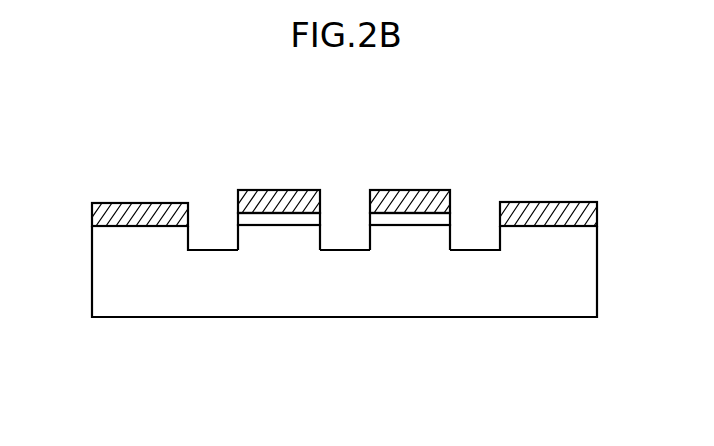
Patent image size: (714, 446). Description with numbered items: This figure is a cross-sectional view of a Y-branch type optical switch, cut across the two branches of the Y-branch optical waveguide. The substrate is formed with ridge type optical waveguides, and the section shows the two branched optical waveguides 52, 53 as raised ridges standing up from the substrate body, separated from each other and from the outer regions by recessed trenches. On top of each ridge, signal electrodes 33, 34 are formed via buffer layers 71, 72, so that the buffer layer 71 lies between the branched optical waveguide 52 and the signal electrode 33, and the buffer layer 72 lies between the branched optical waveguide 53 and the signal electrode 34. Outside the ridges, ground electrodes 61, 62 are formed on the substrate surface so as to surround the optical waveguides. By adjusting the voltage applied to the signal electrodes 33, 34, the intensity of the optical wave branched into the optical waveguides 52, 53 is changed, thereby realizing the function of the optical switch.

The signal electrode 33 is at (280, 200).
The signal electrode 34 is at (410, 202).
The branched optical waveguide 52 is at (280, 238).
The branched optical waveguide 53 is at (408, 238).
The ground electrode 61 is at (140, 210).
The ground electrode 62 is at (550, 208).
The buffer layer 71 is at (255, 218).
The buffer layer 72 is at (437, 218).